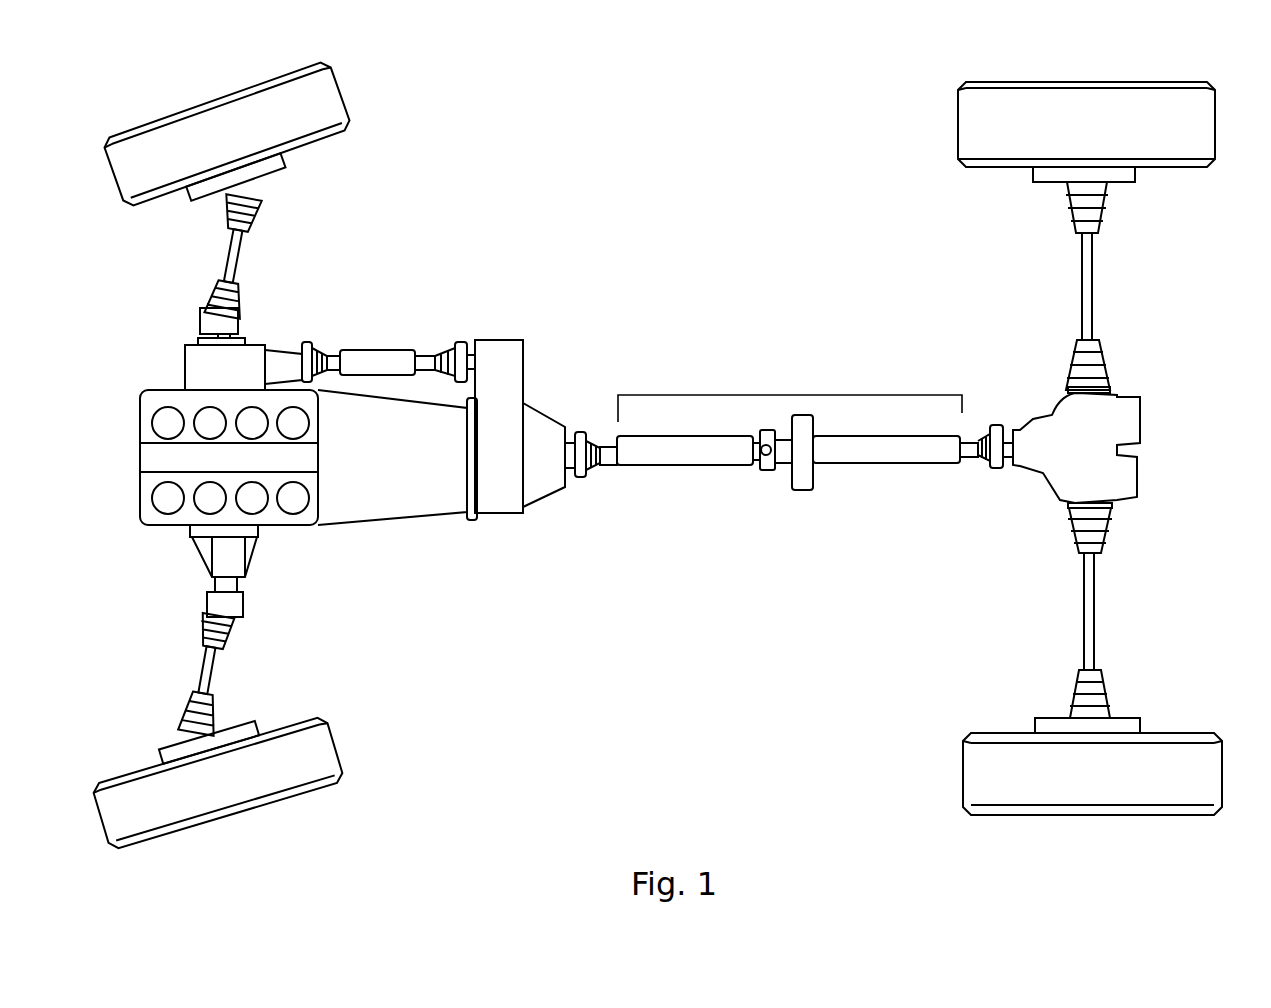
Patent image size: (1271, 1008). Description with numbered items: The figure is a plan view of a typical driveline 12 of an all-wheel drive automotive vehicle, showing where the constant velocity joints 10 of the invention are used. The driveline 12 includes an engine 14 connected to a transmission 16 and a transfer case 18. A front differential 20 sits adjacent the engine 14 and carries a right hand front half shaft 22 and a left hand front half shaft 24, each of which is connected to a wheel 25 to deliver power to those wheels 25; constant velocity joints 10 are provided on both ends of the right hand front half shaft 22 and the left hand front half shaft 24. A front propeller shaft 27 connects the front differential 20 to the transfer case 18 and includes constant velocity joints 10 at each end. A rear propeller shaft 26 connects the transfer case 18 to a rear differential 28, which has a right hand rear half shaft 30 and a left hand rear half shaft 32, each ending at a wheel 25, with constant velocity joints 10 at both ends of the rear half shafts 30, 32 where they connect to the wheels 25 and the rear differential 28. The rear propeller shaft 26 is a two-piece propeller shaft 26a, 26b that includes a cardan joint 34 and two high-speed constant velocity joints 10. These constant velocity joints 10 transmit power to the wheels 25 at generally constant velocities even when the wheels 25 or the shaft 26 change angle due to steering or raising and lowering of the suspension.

The constant velocity joint 10 is at (222, 225).
The driveline 12 is at (640, 240).
The engine 14 is at (150, 520).
The transmission 16 is at (405, 485).
The transfer case 18 is at (508, 393).
The front differential 20 is at (247, 355).
The right hand front half shaft 22 is at (240, 251).
The left hand front half shaft 24 is at (215, 667).
The wheel 25 is at (335, 107).
The rear propeller shaft 26 is at (789, 443).
The rear propeller shaft piece 26a is at (683, 455).
The rear propeller shaft piece 26b is at (877, 455).
The front propeller shaft 27 is at (375, 355).
The rear differential 28 is at (1048, 450).
The right hand rear half shaft 30 is at (1090, 285).
The left hand rear half shaft 32 is at (1093, 612).
The cardan joint 34 is at (770, 478).